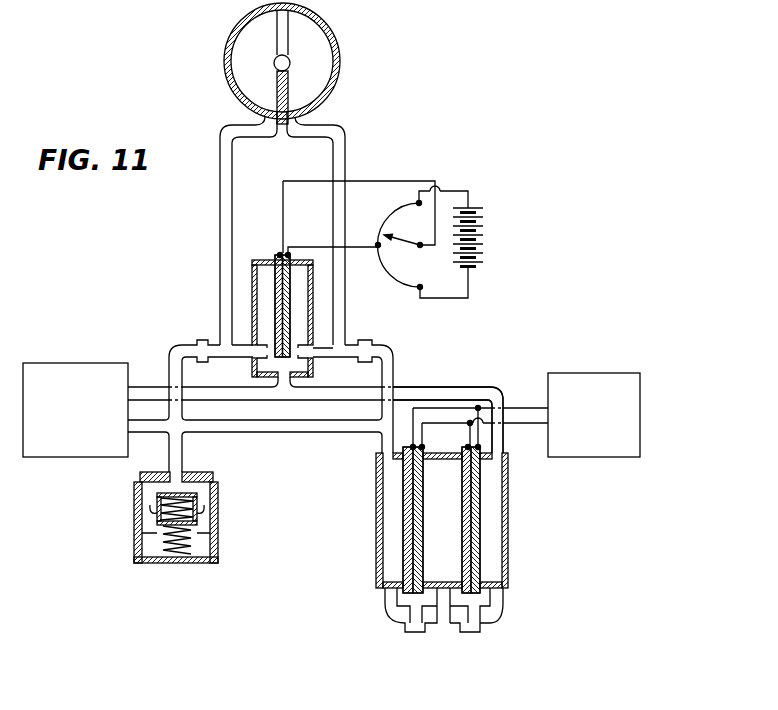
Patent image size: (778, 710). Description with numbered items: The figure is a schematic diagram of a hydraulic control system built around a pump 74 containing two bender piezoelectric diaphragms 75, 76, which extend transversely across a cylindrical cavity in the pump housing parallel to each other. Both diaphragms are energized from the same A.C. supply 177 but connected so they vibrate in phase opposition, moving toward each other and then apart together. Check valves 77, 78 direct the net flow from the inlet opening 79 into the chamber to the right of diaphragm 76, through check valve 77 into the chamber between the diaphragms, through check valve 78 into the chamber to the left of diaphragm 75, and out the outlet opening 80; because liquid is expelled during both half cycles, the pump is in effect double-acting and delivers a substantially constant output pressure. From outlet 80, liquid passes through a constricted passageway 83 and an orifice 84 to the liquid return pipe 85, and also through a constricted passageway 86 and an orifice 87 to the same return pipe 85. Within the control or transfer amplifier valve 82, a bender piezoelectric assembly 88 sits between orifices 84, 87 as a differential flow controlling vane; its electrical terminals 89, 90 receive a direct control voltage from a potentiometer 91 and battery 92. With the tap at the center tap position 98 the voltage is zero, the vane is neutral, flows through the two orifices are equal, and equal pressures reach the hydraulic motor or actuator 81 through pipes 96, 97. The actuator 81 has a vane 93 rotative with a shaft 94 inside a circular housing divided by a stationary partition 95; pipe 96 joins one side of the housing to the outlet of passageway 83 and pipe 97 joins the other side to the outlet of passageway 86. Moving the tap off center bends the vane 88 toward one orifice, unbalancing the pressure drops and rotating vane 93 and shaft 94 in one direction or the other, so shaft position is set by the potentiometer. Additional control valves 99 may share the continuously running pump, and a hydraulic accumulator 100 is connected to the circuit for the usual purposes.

The pump 74 is at (508, 558).
The bender piezoelectric diaphragm 75 is at (423, 514).
The bender piezoelectric diaphragm 76 is at (462, 547).
The check valve 77 is at (470, 632).
The check valve 78 is at (420, 632).
The inlet opening 79 is at (503, 447).
The outlet opening 80 is at (376, 454).
The hydraulic motor or actuator 81 is at (339, 53).
The control or transfer amplifier valve 82 is at (252, 281).
The constricted passageway 83 is at (366, 344).
The orifice 84 is at (300, 343).
The liquid return pipe 85 is at (335, 387).
The constricted passageway 86 is at (199, 342).
The orifice 87 is at (257, 340).
The bender piezoelectric assembly 88 is at (292, 315).
The electrical terminal 89 is at (279, 250).
The electrical terminal 90 is at (291, 251).
The potentiometer 91 is at (396, 219).
The battery 92 is at (486, 246).
The vane 93 is at (277, 39).
The shaft 94 is at (289, 67).
The stationary partition 95 is at (277, 90).
The pipe or fluid passageway 96 is at (345, 158).
The pipe or fluid passageway 97 is at (220, 189).
The center tap position 98 is at (378, 248).
The additional control valves 99 is at (78, 363).
The hydraulic accumulator 100 is at (218, 528).
The A.C. supply 177 is at (600, 373).